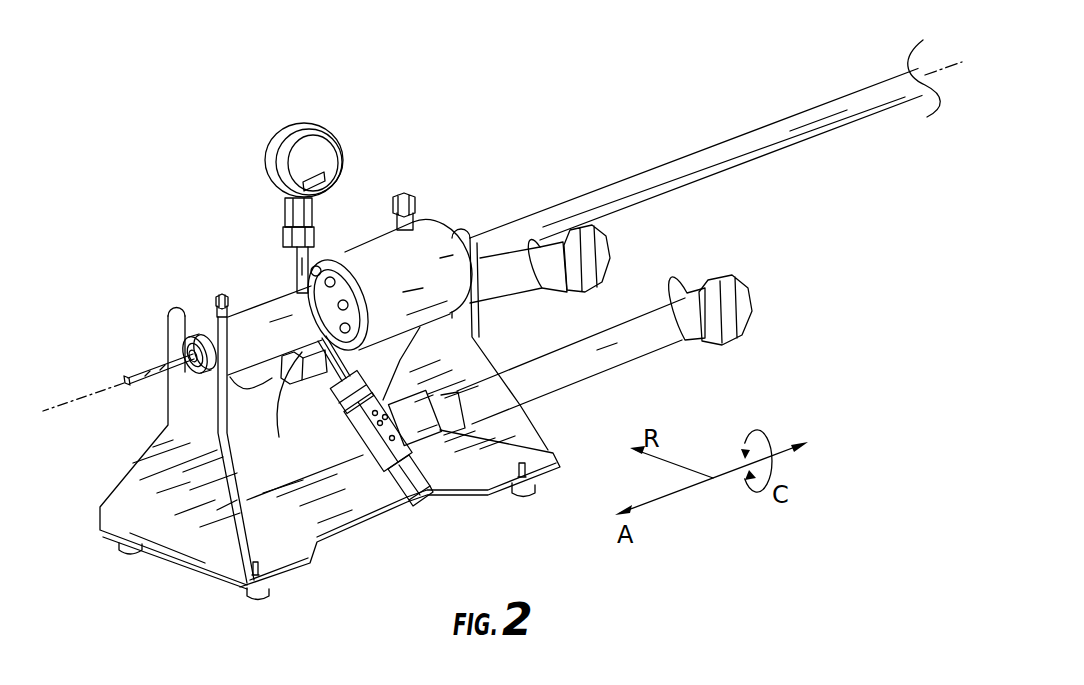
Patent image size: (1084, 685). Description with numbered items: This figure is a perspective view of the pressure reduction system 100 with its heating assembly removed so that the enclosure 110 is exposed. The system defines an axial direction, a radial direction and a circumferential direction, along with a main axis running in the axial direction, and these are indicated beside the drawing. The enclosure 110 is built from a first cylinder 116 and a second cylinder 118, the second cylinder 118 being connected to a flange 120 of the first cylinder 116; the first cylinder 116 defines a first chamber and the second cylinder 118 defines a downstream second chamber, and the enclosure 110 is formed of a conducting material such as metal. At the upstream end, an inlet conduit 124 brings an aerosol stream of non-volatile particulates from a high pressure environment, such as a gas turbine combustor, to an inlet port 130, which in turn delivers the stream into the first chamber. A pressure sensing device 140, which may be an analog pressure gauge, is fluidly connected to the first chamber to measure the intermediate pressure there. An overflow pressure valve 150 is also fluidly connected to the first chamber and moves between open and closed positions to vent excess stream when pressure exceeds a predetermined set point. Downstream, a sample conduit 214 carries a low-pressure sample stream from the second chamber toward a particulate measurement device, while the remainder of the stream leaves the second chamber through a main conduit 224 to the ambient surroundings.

The pressure reduction system 100 is at (502, 319).
The enclosure 110 is at (323, 231).
The first cylinder 116 is at (248, 302).
The second cylinder 118 is at (373, 233).
The flange 120 is at (322, 268).
The inlet conduit 124 is at (140, 372).
The inlet port 130 is at (186, 346).
The pressure sensing device 140 is at (311, 126).
The overflow pressure valve 150 is at (357, 436).
The sample conduit 214 is at (418, 208).
The main conduit 224 is at (759, 128).